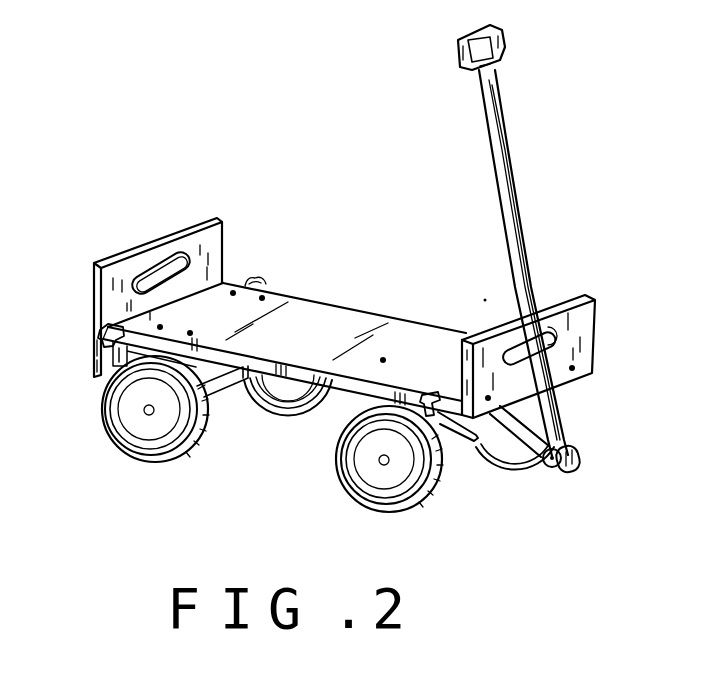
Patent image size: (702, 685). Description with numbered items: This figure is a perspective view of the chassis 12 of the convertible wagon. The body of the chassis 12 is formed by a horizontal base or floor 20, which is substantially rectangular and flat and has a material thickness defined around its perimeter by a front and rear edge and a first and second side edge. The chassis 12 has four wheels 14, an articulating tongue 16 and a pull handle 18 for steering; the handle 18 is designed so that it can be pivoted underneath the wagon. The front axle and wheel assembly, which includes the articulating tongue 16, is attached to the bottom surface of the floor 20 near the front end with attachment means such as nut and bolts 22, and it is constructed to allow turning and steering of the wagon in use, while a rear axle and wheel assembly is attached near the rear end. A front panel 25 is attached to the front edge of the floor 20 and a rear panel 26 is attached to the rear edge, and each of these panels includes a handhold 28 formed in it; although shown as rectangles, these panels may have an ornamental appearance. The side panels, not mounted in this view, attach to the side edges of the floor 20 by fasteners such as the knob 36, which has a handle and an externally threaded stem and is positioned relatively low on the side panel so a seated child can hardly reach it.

The chassis 12 is at (257, 446).
The wheels 14 is at (380, 513).
The articulating tongue 16 is at (512, 440).
The pull handle 18 is at (516, 205).
The floor 20 is at (358, 326).
The nut and bolts 22 is at (262, 297).
The front panel 25 is at (582, 342).
The rear panel 26 is at (220, 243).
The handhold 28 is at (177, 262).
The knob 36 is at (93, 355).